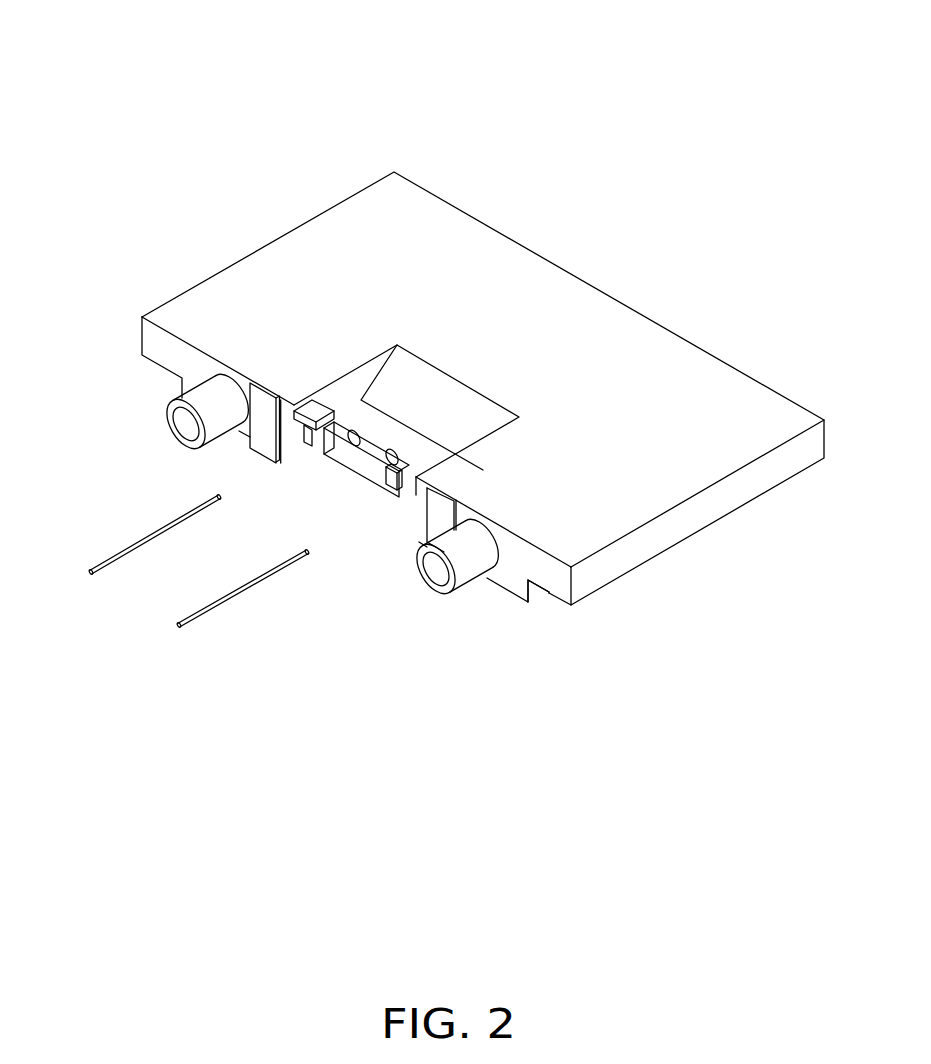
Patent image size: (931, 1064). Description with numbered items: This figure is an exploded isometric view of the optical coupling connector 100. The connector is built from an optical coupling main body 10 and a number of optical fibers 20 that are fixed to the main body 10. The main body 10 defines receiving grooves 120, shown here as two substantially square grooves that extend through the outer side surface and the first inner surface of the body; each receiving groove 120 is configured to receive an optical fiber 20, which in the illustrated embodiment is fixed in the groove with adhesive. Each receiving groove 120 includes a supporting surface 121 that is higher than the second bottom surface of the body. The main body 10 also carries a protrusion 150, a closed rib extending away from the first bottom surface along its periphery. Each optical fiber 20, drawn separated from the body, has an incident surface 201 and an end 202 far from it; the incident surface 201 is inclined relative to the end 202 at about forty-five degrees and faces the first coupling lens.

The optical coupling connector 100 is at (480, 50).
The optical coupling main body 10 is at (259, 240).
The optical fiber 20 is at (123, 552).
The incident surface 201 is at (221, 498).
The end 202 is at (92, 576).
The receiving groove 120 is at (307, 438).
The supporting surface 121 is at (317, 442).
The protrusion 150 is at (535, 593).